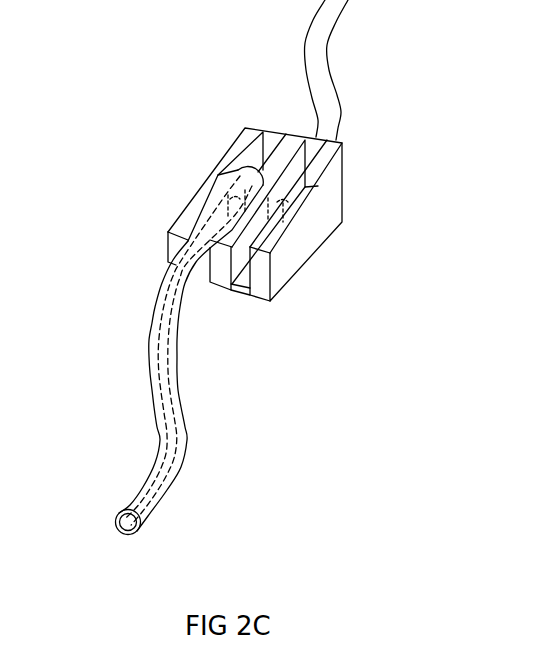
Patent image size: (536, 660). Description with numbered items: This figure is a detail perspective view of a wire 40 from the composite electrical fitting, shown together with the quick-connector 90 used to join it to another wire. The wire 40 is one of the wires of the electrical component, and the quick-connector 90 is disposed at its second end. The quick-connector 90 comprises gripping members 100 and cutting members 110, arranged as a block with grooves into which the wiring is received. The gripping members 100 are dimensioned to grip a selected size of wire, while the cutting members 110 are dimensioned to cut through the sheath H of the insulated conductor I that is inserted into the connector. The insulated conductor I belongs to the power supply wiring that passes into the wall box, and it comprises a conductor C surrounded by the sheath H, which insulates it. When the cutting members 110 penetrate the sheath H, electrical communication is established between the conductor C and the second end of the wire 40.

The wire 40 is at (323, 75).
The quick-connector 90 is at (314, 230).
The gripping member 100 is at (203, 205).
The cutting member 110 is at (265, 173).
The conductor C is at (180, 394).
The sheath H is at (157, 450).
The insulated conductor I is at (150, 318).